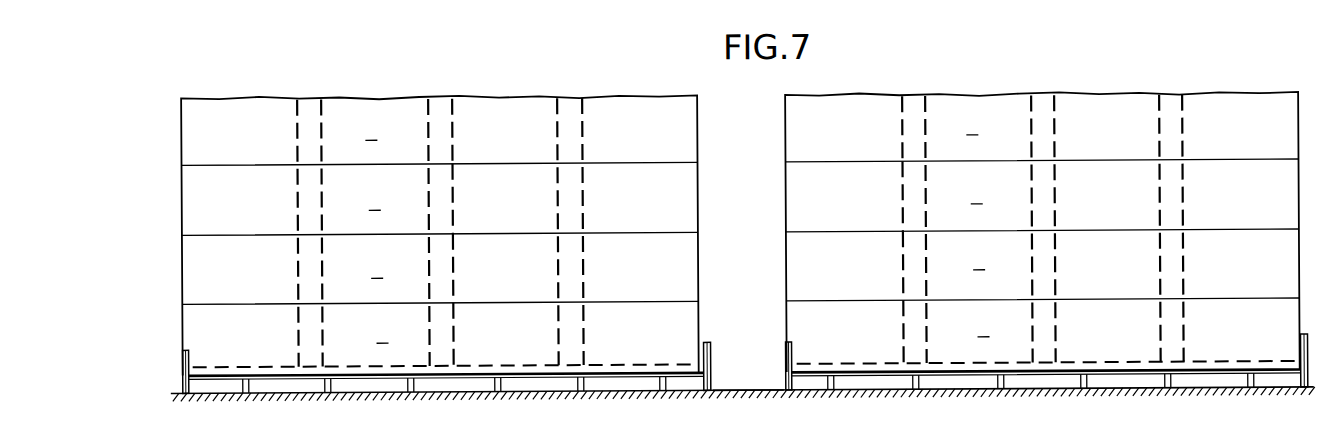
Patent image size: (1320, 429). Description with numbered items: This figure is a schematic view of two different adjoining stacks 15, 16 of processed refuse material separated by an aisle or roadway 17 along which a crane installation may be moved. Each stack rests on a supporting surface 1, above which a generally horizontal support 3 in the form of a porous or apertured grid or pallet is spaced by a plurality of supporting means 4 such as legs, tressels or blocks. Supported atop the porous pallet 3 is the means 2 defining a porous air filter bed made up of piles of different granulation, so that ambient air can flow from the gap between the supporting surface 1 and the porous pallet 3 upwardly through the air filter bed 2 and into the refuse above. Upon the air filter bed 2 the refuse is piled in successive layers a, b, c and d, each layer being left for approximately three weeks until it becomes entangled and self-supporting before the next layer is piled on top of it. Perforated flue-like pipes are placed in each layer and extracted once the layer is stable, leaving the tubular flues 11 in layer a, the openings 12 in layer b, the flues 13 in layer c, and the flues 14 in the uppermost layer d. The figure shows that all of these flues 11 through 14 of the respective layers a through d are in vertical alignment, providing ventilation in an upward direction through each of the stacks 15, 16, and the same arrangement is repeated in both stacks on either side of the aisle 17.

The supporting surface 1 is at (466, 389).
The porous air filter bed 2 is at (390, 374).
The horizontal support 3 is at (350, 381).
The supporting means 4 is at (248, 382).
The tubular flues 11 is at (455, 333).
The openings 12 is at (455, 272).
The flues 13 is at (455, 200).
The flues 14 is at (455, 135).
The stack 15 is at (509, 87).
The stack 16 is at (1093, 86).
The aisle or roadway 17 is at (748, 378).